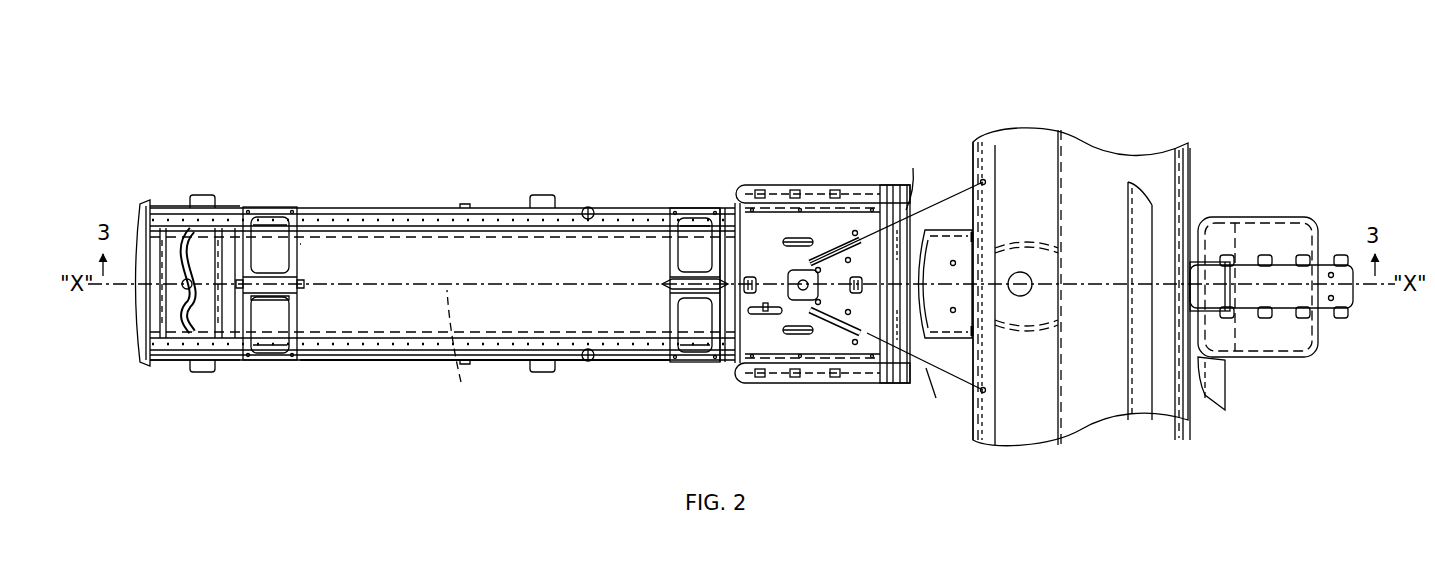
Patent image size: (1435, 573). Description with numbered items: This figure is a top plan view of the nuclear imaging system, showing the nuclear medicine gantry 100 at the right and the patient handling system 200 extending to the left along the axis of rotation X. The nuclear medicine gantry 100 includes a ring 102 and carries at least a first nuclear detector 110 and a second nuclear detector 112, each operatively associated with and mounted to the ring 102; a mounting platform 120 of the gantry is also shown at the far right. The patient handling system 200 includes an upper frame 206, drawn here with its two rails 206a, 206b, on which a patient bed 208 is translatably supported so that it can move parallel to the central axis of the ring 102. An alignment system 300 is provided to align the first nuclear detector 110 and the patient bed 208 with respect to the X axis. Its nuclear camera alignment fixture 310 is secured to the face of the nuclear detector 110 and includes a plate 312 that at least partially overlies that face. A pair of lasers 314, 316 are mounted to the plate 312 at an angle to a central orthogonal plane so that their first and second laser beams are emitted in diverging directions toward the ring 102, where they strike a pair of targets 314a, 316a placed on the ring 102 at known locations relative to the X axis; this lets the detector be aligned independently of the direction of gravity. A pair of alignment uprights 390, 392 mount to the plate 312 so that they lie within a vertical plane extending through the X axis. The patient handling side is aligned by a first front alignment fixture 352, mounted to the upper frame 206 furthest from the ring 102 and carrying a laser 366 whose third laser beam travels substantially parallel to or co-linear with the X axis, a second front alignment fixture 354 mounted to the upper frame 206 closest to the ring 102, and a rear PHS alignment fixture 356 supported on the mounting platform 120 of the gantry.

The nuclear medicine gantry 100 is at (1124, 103).
The ring 102 is at (1160, 173).
The first nuclear detector 110 is at (883, 387).
The second nuclear detector 112 is at (945, 228).
The mounting platform 120 is at (1346, 306).
The patient handling system 200 is at (501, 147).
The upper frame 206 is at (369, 363).
The lower rail 206a is at (322, 360).
The upper rail 206b is at (356, 213).
The patient bed 208 is at (386, 247).
The alignment system 300 is at (724, 186).
The nuclear camera alignment fixture 310 is at (760, 207).
The plate 312 is at (812, 212).
The laser 314 is at (853, 215).
The target 314a is at (984, 182).
The laser 316 is at (856, 334).
The target 316a is at (984, 390).
The first front alignment fixture 352 is at (256, 206).
The second front alignment fixture 354 is at (667, 205).
The rear PHS alignment fixture 356 is at (1229, 331).
The laser 366 is at (266, 300).
The alignment upright 390 is at (745, 296).
The alignment upright 392 is at (853, 300).